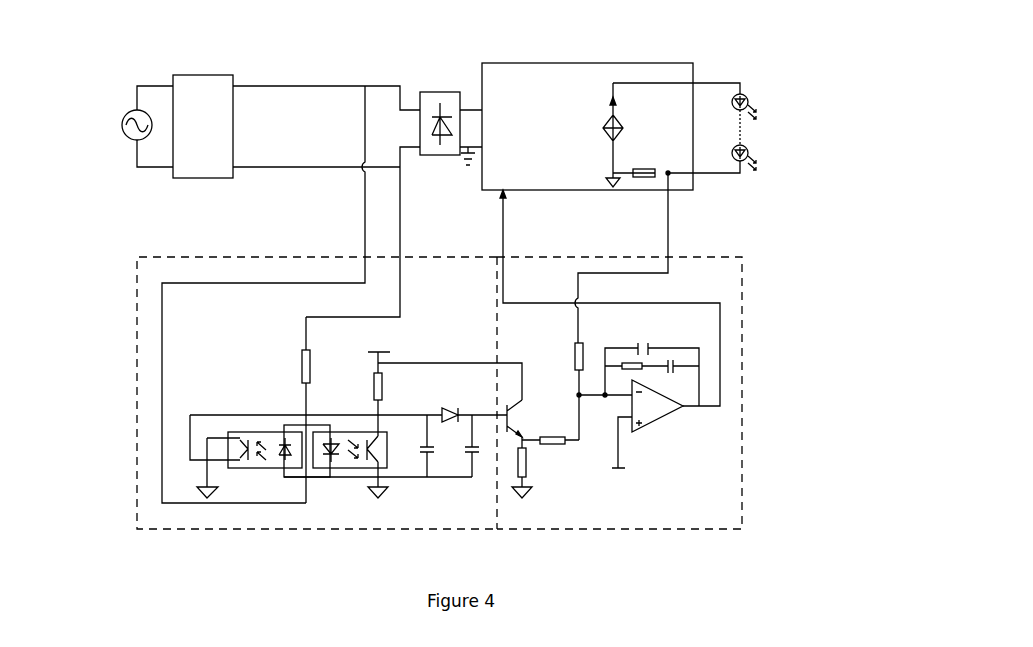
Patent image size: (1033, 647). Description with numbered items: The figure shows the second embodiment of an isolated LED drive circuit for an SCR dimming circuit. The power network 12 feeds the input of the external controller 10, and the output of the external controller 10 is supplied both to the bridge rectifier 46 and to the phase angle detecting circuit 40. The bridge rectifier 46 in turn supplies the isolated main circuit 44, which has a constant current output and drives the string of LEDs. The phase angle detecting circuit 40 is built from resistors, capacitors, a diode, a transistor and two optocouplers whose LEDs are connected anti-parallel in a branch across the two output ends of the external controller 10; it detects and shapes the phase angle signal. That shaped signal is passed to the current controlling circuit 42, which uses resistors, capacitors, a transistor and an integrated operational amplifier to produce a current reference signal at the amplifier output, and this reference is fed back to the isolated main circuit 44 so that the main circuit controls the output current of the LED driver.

The external controller 10 is at (191, 70).
The power network 12 is at (129, 115).
The phase angle detecting circuit 40 is at (132, 255).
The current controlling circuit 42 is at (725, 252).
The isolated main circuit (constant current) 44 is at (584, 60).
The rectifier 46 is at (432, 92).